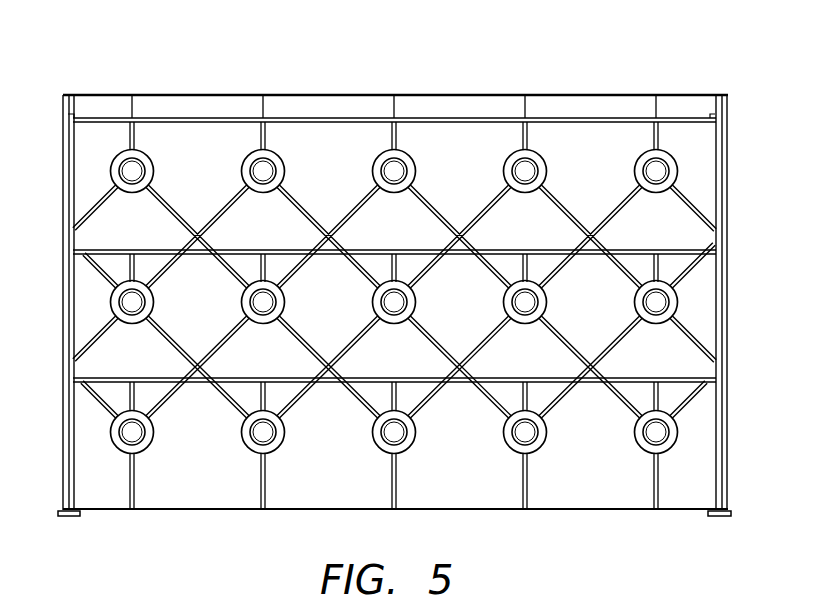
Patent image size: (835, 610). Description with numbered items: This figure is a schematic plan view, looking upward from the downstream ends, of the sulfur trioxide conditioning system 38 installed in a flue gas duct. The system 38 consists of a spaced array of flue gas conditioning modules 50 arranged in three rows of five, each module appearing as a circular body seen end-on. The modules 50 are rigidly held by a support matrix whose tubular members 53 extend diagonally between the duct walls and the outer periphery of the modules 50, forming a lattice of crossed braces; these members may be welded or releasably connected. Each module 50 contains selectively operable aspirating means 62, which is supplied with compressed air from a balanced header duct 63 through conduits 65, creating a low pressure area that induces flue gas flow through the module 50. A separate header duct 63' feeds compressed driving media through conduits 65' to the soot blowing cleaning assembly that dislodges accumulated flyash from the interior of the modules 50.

The sulfur trioxide conditioning system 38 is at (579, 123).
The flue gas conditioning module 50 is at (150, 153).
The tubular member 53 is at (688, 376).
The aspirating means 62 is at (253, 444).
The balanced header duct 63 is at (751, 302).
The header duct 63' is at (38, 302).
The conduit 65 is at (333, 266).
The conduit 65' is at (394, 481).